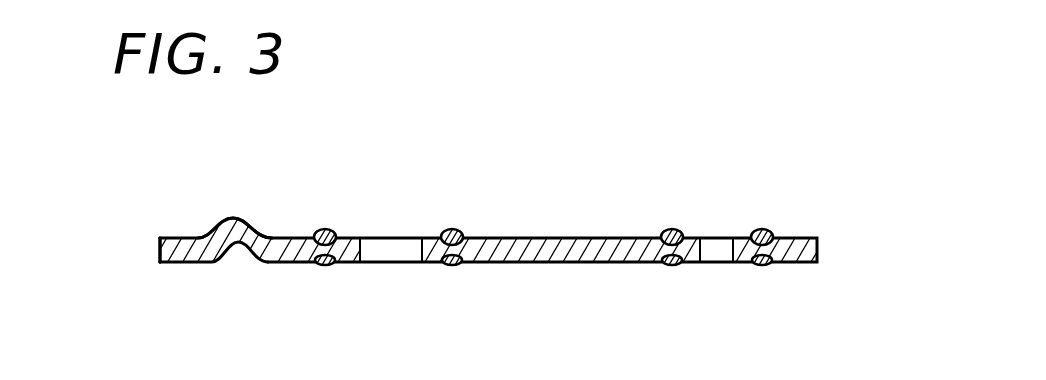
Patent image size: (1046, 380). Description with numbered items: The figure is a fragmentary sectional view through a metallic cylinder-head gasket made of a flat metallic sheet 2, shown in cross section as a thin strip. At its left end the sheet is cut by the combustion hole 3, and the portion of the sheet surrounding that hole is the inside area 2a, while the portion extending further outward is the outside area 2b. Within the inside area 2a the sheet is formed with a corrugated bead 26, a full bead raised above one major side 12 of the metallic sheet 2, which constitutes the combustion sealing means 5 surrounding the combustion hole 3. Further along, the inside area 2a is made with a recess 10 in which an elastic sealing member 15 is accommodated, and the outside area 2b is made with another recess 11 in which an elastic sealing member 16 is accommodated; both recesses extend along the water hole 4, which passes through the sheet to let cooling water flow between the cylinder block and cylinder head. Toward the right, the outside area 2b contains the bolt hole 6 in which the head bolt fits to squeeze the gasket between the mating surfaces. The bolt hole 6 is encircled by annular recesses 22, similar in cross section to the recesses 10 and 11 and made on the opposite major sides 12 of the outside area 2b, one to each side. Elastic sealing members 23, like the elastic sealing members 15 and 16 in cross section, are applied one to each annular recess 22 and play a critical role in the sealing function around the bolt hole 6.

The flat metallic sheet 2 is at (513, 223).
The inside area 2a is at (278, 246).
The outside area 2b is at (557, 250).
The combustion hole 3 is at (160, 250).
The water hole 4 is at (395, 246).
The combustion sealing means 5 is at (238, 217).
The bolt hole 6 is at (718, 245).
The recess 10 is at (335, 231).
The recess 11 is at (462, 232).
The major side 12 is at (605, 245).
The elastic sealing member 15 is at (323, 229).
The elastic sealing member 16 is at (451, 229).
The annular recess 22 is at (672, 230).
The elastic sealing member 23 is at (763, 229).
The corrugated bead 26 is at (222, 232).